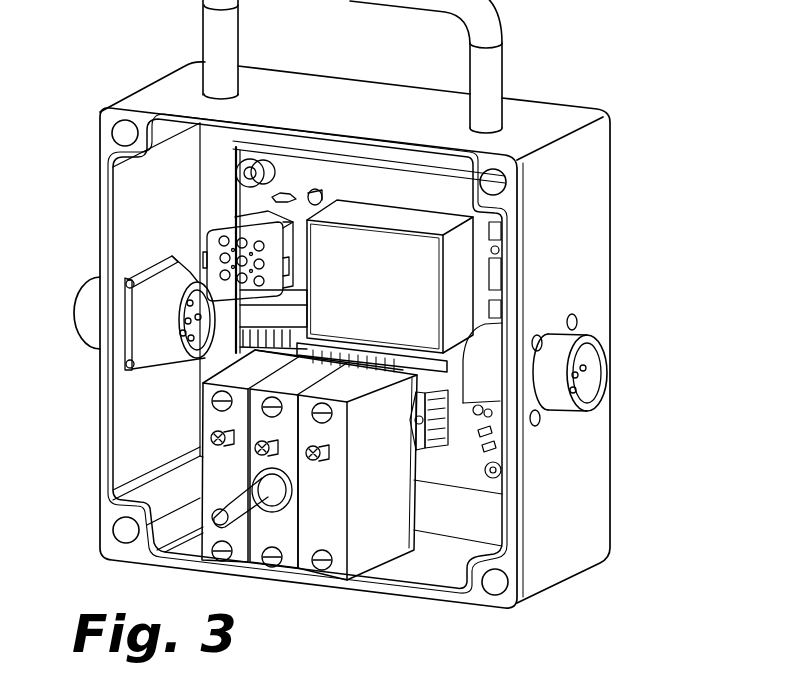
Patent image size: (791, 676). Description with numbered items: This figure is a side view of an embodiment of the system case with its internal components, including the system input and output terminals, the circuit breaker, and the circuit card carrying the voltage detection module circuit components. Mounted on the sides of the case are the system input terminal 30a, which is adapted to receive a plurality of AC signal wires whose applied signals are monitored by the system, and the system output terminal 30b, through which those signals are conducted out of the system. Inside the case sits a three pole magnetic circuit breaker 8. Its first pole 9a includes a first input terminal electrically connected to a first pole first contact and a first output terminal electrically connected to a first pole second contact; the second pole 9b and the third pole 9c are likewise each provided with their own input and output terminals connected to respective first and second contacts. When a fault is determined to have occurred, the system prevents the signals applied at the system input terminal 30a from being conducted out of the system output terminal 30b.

The three pole magnetic circuit breaker 8 is at (384, 532).
The first pole 9a is at (340, 568).
The second pole 9b is at (293, 564).
The third pole 9c is at (213, 420).
The system input terminal 30a is at (590, 378).
The system output terminal 30b is at (97, 274).